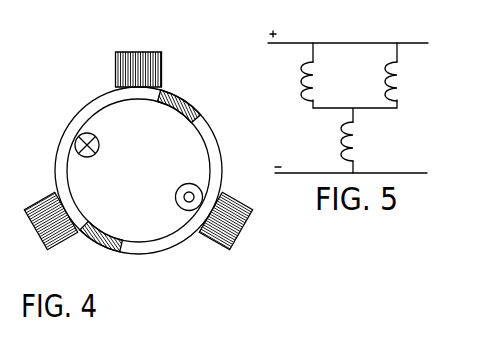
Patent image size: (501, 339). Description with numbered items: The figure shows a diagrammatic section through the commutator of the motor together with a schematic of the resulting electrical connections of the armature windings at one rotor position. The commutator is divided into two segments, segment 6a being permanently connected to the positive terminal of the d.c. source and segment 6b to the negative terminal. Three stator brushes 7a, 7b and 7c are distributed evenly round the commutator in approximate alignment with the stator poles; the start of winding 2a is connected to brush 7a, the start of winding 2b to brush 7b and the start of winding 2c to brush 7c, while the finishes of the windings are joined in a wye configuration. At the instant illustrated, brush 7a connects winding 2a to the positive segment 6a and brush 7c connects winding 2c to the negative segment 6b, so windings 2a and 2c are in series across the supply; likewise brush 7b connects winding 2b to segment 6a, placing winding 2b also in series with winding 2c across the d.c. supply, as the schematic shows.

In FIG. 4, the winding 2a is at (137, 50).
In FIG. 5, the winding 2a is at (379, 81).
In FIG. 4, the winding 2b is at (29, 231).
In FIG. 5, the winding 2b is at (295, 81).
In FIG. 4, the winding 2c is at (249, 231).
In FIG. 5, the winding 2c is at (338, 141).
In FIG. 4, the commutator segment 6a is at (89, 108).
In FIG. 4, the commutator segment 6b is at (136, 254).
In FIG. 4, the brush 7a is at (162, 63).
In FIG. 4, the brush 7b is at (56, 246).
In FIG. 4, the brush 7c is at (223, 246).